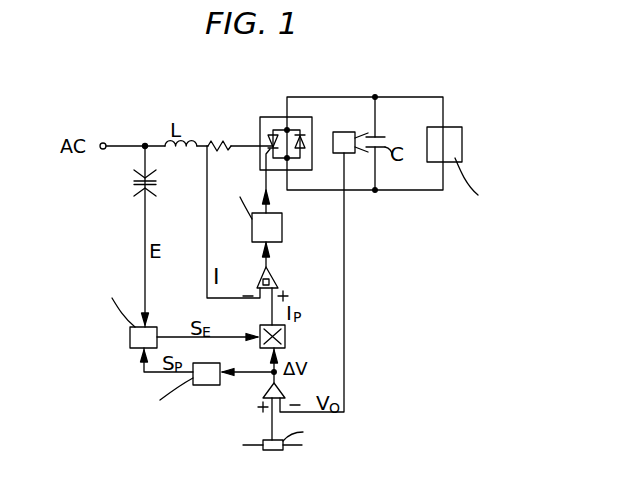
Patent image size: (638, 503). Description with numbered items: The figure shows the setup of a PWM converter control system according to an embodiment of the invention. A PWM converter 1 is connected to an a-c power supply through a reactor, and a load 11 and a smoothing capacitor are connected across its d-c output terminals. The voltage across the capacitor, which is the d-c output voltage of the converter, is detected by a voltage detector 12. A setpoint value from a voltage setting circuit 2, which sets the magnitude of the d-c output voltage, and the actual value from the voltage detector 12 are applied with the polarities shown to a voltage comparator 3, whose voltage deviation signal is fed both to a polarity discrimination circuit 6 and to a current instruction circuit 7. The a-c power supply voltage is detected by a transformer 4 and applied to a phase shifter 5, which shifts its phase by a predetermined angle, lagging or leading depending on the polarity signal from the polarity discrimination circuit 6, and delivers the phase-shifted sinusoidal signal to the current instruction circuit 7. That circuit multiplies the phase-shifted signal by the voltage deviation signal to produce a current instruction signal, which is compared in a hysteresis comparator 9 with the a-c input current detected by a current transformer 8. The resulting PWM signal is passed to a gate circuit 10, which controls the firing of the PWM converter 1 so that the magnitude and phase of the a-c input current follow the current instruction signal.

The PWM converter 1 is at (268, 117).
The voltage setting circuit 2 is at (271, 450).
The voltage comparator 3 is at (281, 388).
The transformer 4 is at (149, 190).
The phase shifter 5 is at (130, 334).
The polarity discrimination circuit 6 is at (212, 386).
The current instruction circuit 7 is at (285, 335).
The current transformer 8 is at (214, 140).
The comparator 9 is at (276, 280).
The gate circuit 10 is at (282, 222).
The load 11 is at (455, 141).
The voltage detector 12 is at (358, 134).